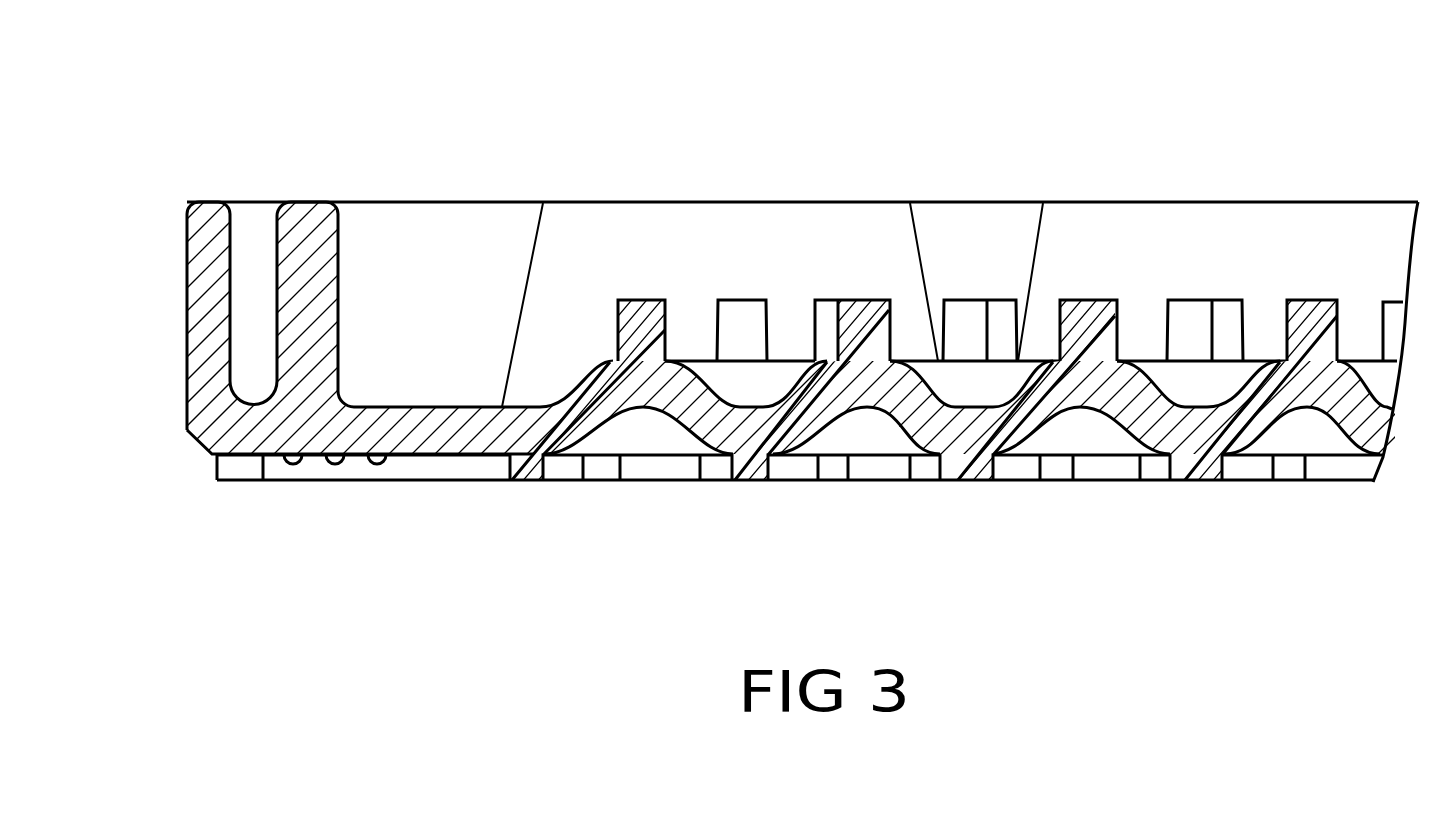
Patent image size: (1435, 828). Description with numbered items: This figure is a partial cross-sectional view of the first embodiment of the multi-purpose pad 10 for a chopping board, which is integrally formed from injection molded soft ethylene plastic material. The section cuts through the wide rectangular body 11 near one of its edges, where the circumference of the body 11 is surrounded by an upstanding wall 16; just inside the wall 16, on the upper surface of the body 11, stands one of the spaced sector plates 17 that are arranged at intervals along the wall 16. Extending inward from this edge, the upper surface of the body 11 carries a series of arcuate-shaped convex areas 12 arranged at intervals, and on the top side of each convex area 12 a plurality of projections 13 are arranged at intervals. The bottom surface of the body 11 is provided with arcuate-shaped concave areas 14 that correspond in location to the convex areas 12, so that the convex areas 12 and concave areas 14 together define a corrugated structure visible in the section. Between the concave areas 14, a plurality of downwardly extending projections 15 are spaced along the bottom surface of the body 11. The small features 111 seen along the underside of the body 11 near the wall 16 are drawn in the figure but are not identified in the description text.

The multi-purpose pad 10 is at (355, 85).
The body 11 is at (443, 435).
The projections 111 is at (295, 466).
The arcuate-shaped convex areas 12 is at (603, 388).
The projections 13 is at (656, 310).
The arcuate-shaped concave areas 14 is at (872, 425).
The downwardly extending projections 15 is at (977, 467).
The upstanding wall 16 is at (202, 332).
The sector plates 17 is at (320, 209).